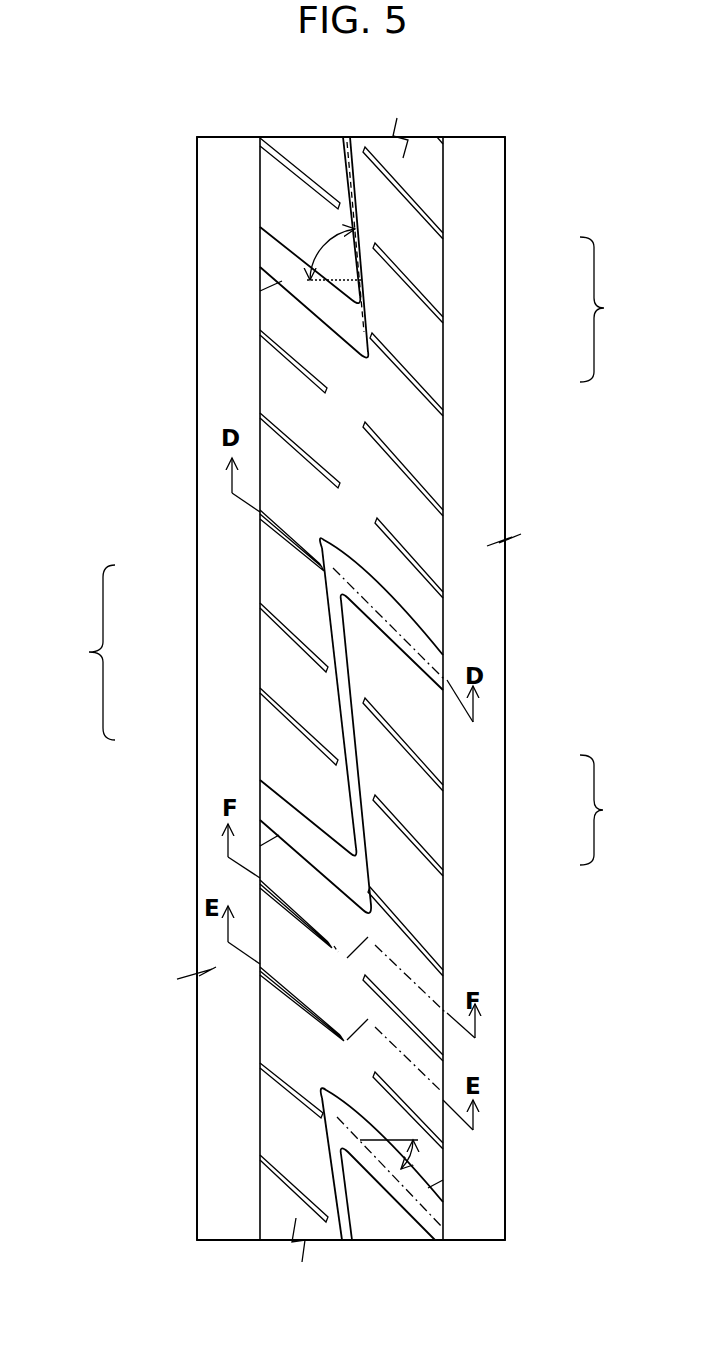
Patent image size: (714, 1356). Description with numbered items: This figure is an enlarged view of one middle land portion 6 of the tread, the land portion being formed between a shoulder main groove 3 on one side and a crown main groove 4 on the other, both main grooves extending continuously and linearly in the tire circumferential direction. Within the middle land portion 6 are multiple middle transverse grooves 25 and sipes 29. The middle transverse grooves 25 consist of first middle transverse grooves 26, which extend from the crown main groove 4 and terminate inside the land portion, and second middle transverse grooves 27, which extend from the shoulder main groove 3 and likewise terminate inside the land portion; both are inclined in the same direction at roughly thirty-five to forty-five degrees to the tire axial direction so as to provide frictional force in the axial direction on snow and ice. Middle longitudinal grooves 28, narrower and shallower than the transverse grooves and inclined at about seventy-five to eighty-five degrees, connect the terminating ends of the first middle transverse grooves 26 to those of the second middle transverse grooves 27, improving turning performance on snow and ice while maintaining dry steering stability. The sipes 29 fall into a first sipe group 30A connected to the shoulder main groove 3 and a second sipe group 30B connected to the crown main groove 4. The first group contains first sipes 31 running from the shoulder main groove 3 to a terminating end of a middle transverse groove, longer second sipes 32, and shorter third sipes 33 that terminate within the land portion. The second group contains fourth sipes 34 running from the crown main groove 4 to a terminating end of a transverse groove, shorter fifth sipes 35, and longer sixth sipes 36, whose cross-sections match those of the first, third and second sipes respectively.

The shoulder main groove 3 is at (229, 183).
The crown main groove 4 is at (472, 183).
The middle land portion 6 is at (380, 190).
The middle transverse groove 25 is at (352, 693).
The first middle transverse groove 26 is at (393, 628).
The second middle transverse groove 27 is at (314, 838).
The middle longitudinal groove 28 is at (351, 180).
The sipe 29 is at (346, 680).
The first sipe group 30A is at (199, 680).
The second sipe group 30B is at (512, 648).
The first sipe 31 is at (305, 546).
The second sipe 32 is at (300, 725).
The third sipe 33 is at (300, 638).
The fourth sipe 34 is at (415, 375).
The fifth sipe 35 is at (420, 288).
The sixth sipe 36 is at (408, 200).